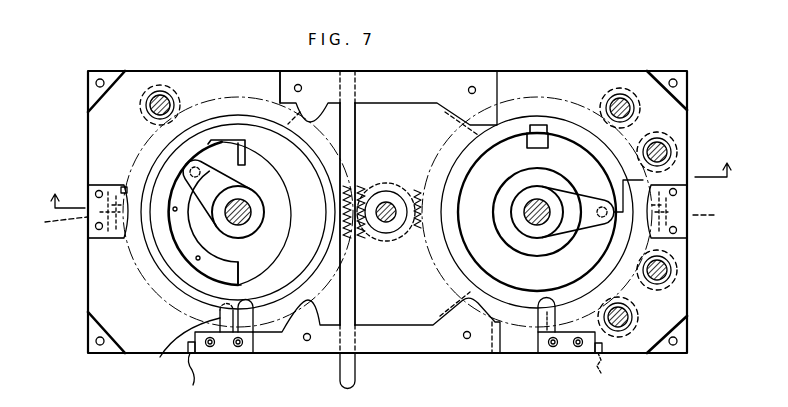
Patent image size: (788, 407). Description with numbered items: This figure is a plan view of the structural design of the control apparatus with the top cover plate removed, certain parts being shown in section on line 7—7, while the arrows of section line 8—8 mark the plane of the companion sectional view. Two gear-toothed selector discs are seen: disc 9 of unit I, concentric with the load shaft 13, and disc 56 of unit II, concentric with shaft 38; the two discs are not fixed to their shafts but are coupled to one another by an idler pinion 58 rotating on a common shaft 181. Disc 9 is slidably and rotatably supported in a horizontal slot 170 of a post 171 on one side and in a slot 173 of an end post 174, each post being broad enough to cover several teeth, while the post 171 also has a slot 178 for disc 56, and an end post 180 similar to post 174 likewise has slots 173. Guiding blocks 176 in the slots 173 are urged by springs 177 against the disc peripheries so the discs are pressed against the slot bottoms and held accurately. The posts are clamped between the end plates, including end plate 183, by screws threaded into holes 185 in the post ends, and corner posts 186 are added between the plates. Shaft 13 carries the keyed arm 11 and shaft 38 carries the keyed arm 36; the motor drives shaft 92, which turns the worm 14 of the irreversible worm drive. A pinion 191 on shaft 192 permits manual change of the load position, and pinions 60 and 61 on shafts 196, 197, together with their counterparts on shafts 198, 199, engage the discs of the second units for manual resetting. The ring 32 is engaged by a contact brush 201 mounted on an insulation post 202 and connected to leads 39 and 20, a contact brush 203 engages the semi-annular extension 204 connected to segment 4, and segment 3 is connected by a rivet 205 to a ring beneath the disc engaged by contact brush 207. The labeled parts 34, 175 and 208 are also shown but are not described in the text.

The segment 3 is at (180, 240).
The segment 4 is at (267, 256).
The section line 7— 7 is at (240, 148).
The section line 8— 8 is at (393, 189).
The selector disc 9 is at (185, 275).
The arm 11 is at (223, 178).
The shaft 13 is at (253, 203).
The worm 14 is at (328, 227).
The lead 20 is at (191, 378).
The ring 32 is at (460, 258).
The notch 34 is at (531, 147).
The arm 36 is at (570, 197).
The shaft 38 is at (530, 228).
The lead 39 is at (600, 372).
The selector disc 56 is at (441, 167).
The idler pinion 58 is at (388, 178).
The pinion 60 is at (634, 317).
The pinion 61 is at (680, 272).
The shaft 92 is at (356, 125).
The horizontal slot 170 is at (296, 207).
The post 171 is at (281, 70).
The slot 173 is at (113, 237).
The end post 174 is at (95, 228).
The pinion teeth 175 is at (415, 236).
The guiding block 176 is at (86, 193).
The spring 177 is at (381, 218).
The slot 178 is at (437, 311).
The end post 180 is at (680, 197).
The common shaft 181 is at (385, 234).
The end plate 183 is at (534, 72).
The hole 185 is at (473, 87).
The corner post 186 is at (117, 353).
The pinion 191 is at (177, 104).
The shaft 192 is at (166, 94).
The shaft 196 is at (664, 268).
The shaft 197 is at (621, 328).
The shaft 198 is at (664, 143).
The shaft 199 is at (612, 98).
The contact brush 201 is at (547, 302).
The insulation post 202 is at (558, 353).
The contact brush 203 is at (248, 315).
The semi-annular extension 204 is at (188, 288).
The rivet 205 is at (213, 228).
The contact brush 207 is at (185, 352).
The bracket 208 is at (227, 353).